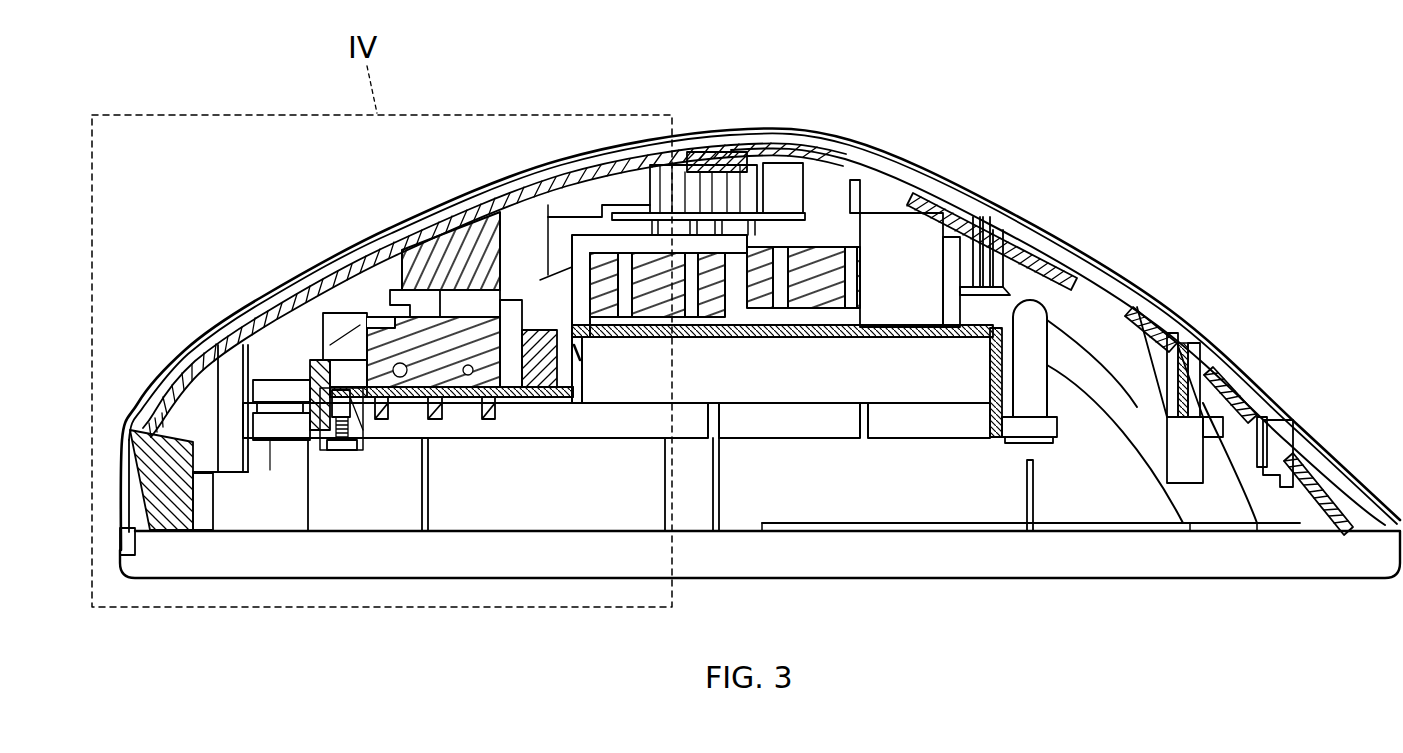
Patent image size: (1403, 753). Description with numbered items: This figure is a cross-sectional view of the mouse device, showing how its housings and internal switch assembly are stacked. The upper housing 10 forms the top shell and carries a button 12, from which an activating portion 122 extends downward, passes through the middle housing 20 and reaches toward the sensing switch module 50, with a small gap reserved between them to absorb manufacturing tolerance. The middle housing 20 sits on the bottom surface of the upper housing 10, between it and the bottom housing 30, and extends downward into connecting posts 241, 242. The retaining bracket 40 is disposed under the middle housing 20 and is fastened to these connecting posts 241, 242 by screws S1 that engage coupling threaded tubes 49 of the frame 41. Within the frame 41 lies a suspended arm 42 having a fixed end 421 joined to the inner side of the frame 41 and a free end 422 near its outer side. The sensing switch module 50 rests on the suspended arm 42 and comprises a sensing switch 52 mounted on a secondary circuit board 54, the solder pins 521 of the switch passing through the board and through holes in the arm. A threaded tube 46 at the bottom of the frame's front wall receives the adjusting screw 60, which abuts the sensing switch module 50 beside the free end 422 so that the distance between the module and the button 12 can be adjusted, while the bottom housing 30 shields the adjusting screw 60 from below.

The upper housing 10 is at (983, 170).
The button 12 is at (435, 207).
The activating portion 122 is at (395, 300).
The middle housing 20 is at (1038, 272).
The connecting post 241 is at (246, 385).
The connecting post 242 is at (1035, 398).
The bottom housing 30 is at (1260, 582).
The retaining bracket 40 is at (915, 438).
The frame 41 is at (309, 372).
The suspended arm 42 is at (473, 451).
The fixed end 421 is at (565, 400).
The free end 422 is at (388, 405).
The threaded tube 46 is at (298, 430).
The coupling threaded tube 49 is at (262, 430).
The sensing switch module 50 is at (416, 277).
The sensing switch 52 is at (388, 337).
The solder pin 521 is at (440, 417).
The secondary circuit board 54 is at (568, 378).
The adjusting screw 60 is at (343, 453).
The screw S1 is at (278, 443).